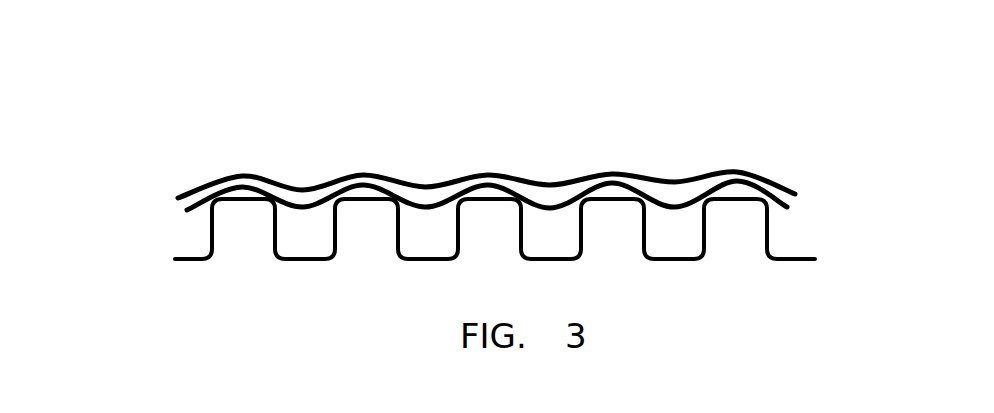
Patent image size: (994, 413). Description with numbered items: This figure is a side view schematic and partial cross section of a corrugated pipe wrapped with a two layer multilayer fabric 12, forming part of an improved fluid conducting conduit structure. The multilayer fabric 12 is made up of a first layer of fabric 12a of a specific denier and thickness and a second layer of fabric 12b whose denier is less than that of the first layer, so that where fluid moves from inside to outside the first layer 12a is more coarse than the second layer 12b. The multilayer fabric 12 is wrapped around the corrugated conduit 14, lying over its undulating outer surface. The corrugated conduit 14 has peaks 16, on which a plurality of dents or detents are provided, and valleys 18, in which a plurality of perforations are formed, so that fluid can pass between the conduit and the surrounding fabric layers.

The multilayer fabric 12 is at (486, 151).
The first layer of fabric 12a is at (423, 205).
The second layer of fabric 12b is at (535, 182).
The corrugated conduit 14 is at (177, 238).
The peaks 16 is at (241, 198).
The valleys 18 is at (317, 258).